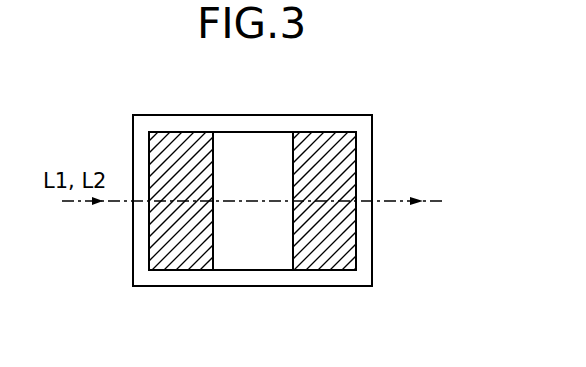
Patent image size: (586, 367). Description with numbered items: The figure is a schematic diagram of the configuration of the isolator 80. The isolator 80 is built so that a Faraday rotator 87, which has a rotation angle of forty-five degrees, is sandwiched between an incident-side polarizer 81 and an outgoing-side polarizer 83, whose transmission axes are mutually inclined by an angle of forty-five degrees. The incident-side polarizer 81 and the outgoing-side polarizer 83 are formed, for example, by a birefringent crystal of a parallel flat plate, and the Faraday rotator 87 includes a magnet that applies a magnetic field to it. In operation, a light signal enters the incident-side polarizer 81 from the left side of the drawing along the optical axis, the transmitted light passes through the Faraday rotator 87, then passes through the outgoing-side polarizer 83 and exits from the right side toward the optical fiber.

The isolator 80 is at (265, 78).
The incident-side polarizer 81 is at (183, 259).
The Faraday rotator 87 is at (255, 259).
The outgoing-side polarizer 83 is at (327, 259).